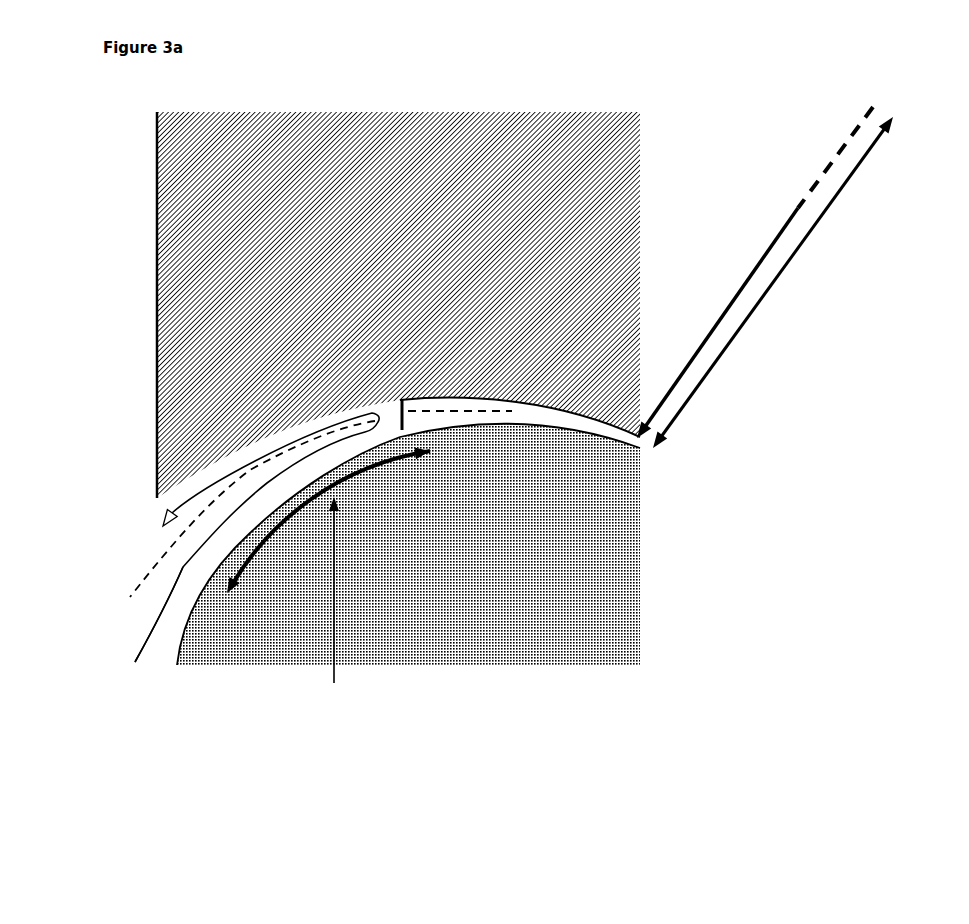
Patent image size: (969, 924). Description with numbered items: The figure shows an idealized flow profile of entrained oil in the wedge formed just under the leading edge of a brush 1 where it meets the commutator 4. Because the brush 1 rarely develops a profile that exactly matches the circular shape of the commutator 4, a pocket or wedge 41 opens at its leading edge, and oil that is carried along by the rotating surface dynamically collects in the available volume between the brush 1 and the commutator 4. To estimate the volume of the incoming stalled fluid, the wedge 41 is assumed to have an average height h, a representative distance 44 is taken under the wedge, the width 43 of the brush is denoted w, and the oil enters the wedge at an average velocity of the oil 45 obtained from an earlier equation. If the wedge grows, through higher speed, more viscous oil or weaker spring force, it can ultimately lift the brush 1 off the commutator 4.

The brush 1 is at (648, 173).
The commutator 4 is at (240, 651).
The wedge 41 is at (412, 408).
The width of the brush 43 is at (765, 277).
The representative distance 44 is at (334, 683).
The average velocity of the oil 45 is at (131, 635).